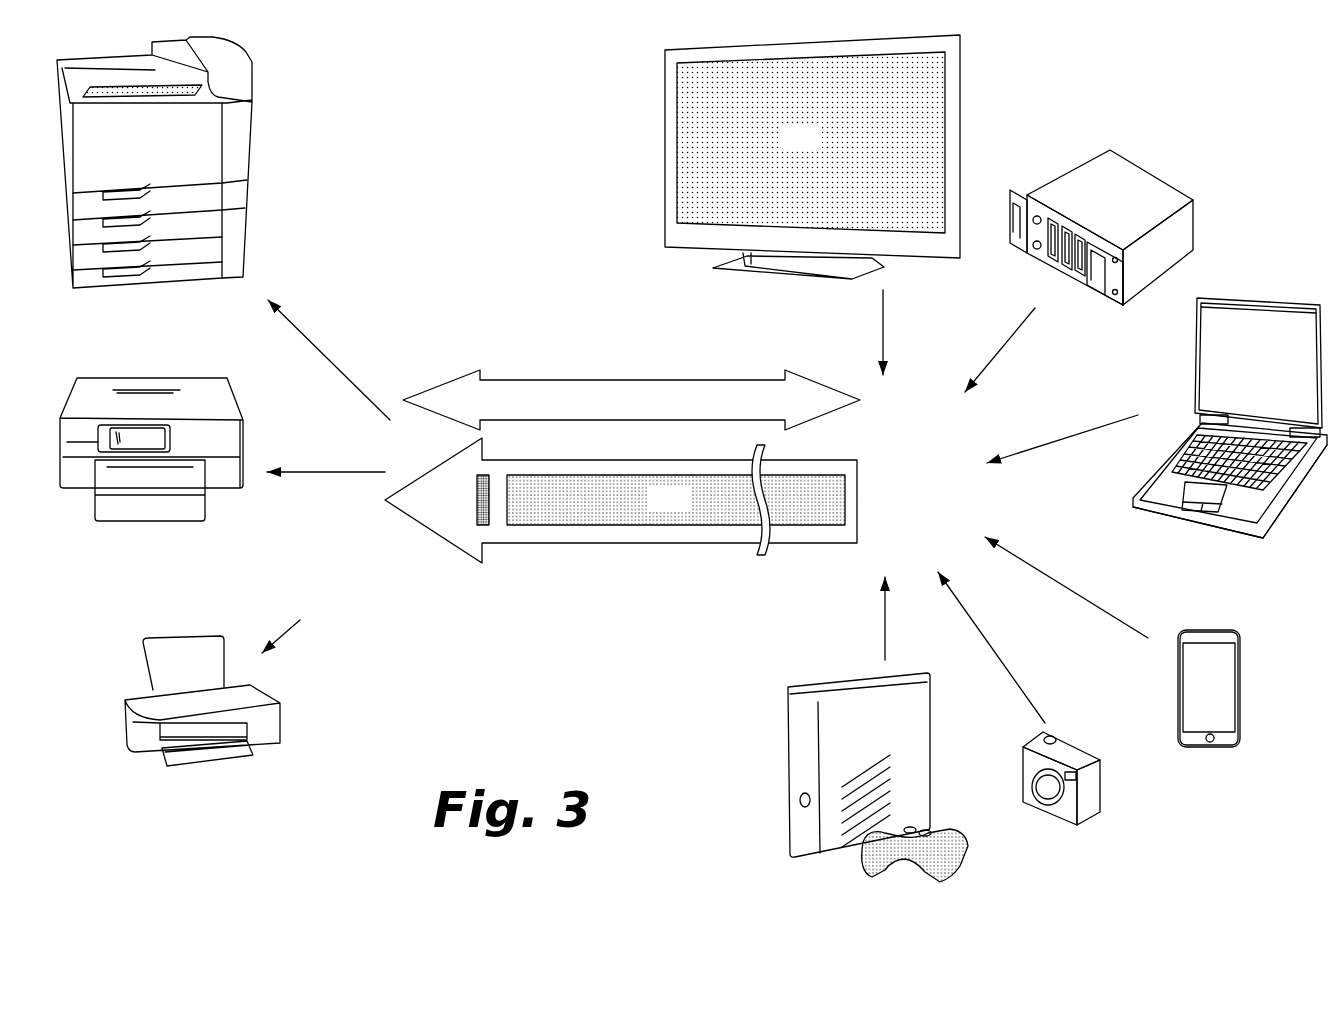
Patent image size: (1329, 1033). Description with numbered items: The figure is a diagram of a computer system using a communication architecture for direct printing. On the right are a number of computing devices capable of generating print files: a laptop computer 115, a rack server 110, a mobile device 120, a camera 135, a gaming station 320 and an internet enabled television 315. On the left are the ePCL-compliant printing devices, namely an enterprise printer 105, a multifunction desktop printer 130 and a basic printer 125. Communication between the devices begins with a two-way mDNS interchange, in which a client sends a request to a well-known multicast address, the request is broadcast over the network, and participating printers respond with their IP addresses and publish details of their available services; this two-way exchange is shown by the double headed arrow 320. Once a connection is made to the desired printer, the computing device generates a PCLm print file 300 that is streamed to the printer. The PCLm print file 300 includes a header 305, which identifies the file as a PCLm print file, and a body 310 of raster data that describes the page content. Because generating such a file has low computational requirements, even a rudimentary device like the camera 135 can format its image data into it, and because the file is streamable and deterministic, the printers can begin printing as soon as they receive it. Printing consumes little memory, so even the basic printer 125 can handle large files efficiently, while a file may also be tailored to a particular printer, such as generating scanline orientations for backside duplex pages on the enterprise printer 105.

The enterprise printer 105 is at (125, 156).
The rack server 110 is at (1095, 208).
The laptop computer 115 is at (1244, 383).
The mobile device 120 is at (1192, 701).
The basic printer 125 is at (145, 710).
The multifunction desktop printer 130 is at (228, 441).
The camera 135 is at (1063, 747).
The PCLm print file 300 is at (621, 511).
The header 305 is at (485, 525).
The body 310 is at (652, 509).
The internet enabled television 315 is at (782, 148).
The double headed arrow 320 is at (627, 413).